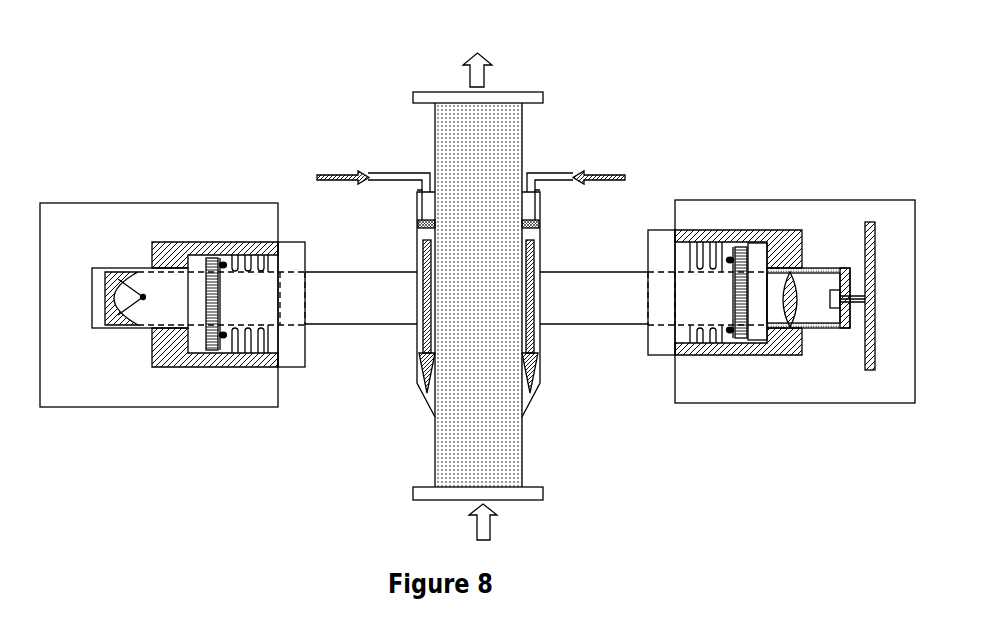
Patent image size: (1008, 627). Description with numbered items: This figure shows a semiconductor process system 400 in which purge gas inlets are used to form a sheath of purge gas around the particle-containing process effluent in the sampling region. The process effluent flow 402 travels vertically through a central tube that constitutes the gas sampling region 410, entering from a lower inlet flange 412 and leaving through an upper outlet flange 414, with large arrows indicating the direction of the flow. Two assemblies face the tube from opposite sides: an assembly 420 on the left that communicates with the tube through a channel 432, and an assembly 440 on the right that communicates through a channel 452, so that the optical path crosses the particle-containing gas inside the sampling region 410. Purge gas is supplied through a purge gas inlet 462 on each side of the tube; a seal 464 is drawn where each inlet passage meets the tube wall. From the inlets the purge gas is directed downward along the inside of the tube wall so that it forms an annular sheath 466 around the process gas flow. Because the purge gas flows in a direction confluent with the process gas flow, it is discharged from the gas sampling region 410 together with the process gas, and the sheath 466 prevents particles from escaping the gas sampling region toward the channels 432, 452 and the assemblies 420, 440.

The optical measurement system 400 is at (248, 130).
The process fluid flow 402 is at (477, 150).
The gas sampling region 410 is at (435, 133).
The inlet flange 412 is at (508, 500).
The outlet flange 414 is at (510, 92).
The light source assembly 420 is at (92, 380).
The source optical channel 432 is at (372, 309).
The detector assembly 440 is at (849, 390).
The detector optical channel 452 is at (653, 298).
The purge gas inlet 462 is at (332, 182).
The seal 464 is at (428, 227).
The annular sheath 466 is at (424, 298).